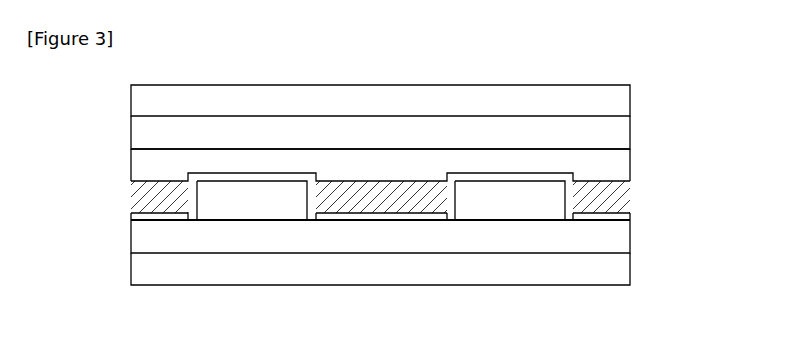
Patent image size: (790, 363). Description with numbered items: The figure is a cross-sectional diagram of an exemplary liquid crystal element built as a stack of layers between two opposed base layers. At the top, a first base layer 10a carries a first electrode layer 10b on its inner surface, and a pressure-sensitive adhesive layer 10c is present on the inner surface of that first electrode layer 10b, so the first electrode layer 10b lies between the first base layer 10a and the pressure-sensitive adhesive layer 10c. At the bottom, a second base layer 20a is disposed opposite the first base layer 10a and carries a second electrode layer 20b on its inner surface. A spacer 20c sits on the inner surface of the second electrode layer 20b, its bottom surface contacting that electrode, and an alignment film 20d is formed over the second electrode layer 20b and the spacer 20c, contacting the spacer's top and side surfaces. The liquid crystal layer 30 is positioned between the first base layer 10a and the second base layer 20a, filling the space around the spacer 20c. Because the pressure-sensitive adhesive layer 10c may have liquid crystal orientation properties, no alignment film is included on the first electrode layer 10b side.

The first base layer 10a is at (630, 100).
The first electrode layer 10b is at (630, 134).
The pressure-sensitive adhesive layer 10c is at (630, 165).
The liquid crystal layer 30 is at (630, 193).
The alignment film 20d is at (630, 213).
The spacer 20c is at (253, 205).
The second electrode layer 20b is at (630, 245).
The second base layer 20a is at (630, 272).